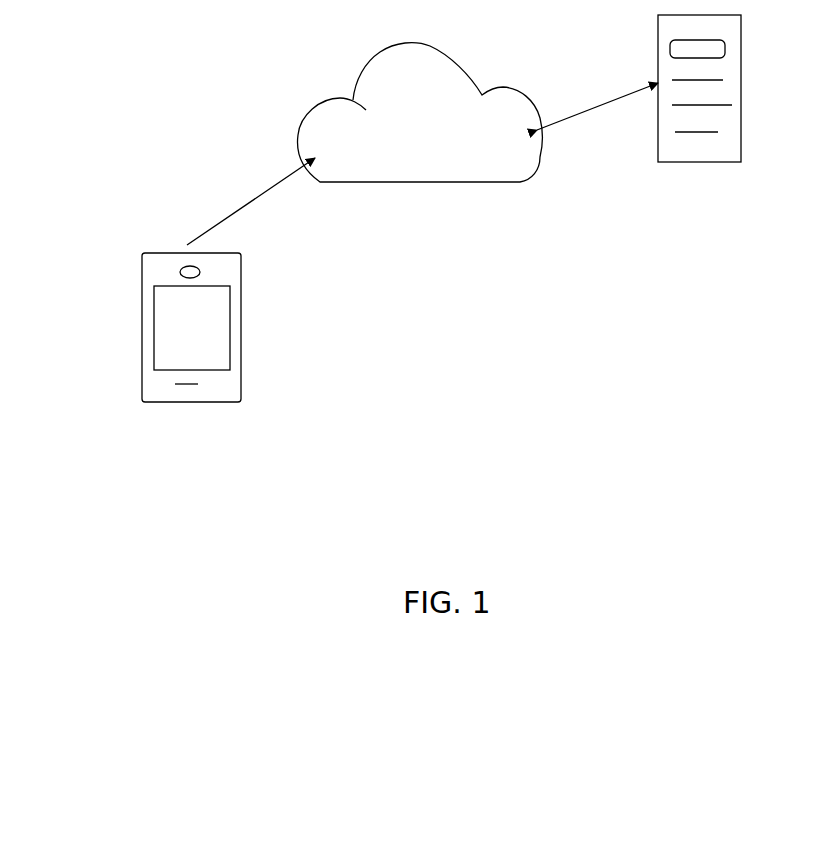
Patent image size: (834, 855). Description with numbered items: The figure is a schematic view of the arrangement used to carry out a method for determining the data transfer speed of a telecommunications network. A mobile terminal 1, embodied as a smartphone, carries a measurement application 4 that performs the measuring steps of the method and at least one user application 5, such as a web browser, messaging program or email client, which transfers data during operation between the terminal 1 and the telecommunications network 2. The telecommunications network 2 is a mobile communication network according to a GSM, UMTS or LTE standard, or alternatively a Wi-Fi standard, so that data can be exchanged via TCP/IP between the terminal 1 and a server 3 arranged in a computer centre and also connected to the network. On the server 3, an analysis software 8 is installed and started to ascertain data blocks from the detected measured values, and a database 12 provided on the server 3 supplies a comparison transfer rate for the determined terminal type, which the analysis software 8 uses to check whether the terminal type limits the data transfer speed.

The mobile terminal 1 is at (211, 378).
The telecommunications network 2 is at (380, 170).
The server 3 is at (695, 257).
The measurement application 4 is at (200, 360).
The user application 5 is at (167, 360).
The analysis software 8 is at (690, 150).
The database 12 is at (726, 150).